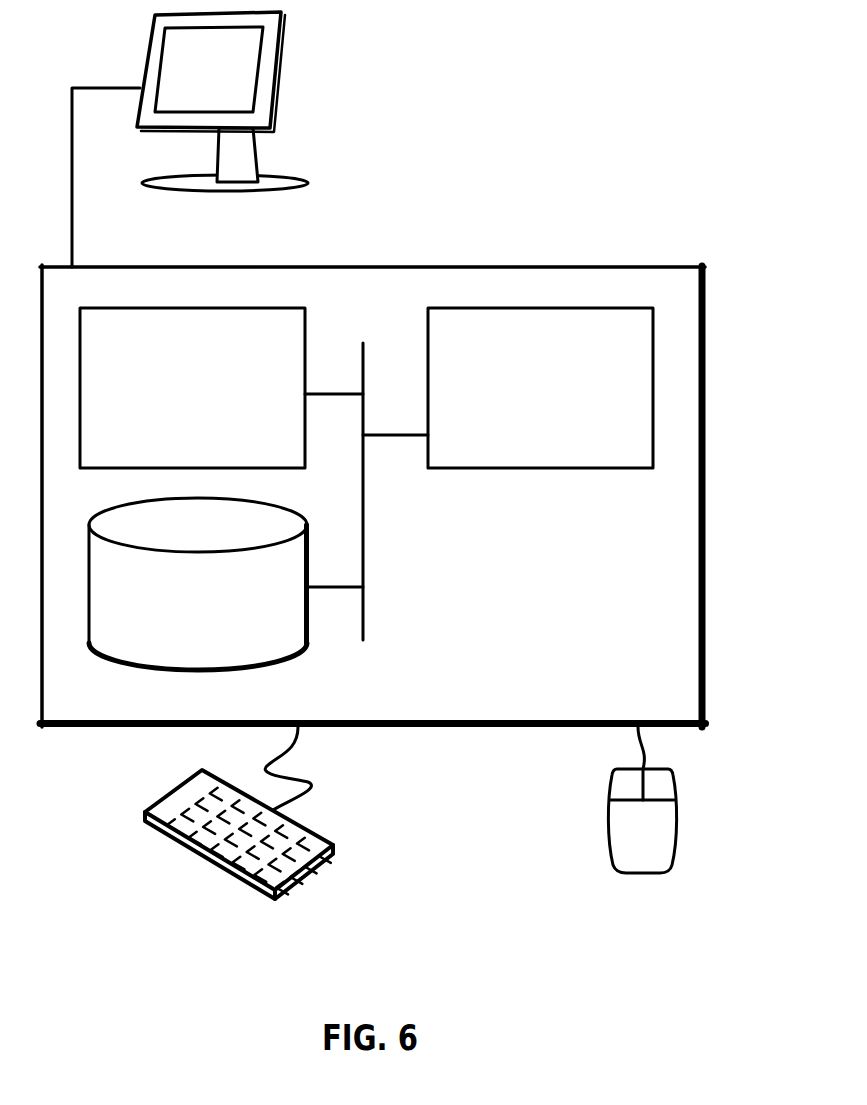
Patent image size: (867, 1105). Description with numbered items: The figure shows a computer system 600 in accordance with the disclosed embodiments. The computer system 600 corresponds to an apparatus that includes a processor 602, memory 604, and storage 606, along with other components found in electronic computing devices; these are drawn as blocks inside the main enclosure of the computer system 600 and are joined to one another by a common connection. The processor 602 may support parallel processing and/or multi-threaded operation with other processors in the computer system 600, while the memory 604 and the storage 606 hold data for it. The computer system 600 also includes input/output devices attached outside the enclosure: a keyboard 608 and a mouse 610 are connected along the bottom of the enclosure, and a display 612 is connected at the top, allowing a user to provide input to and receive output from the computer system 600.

The computer system 600 is at (418, 245).
The processor 602 is at (524, 400).
The memory 604 is at (175, 400).
The storage 606 is at (180, 612).
The keyboard 608 is at (163, 830).
The mouse 610 is at (622, 842).
The display 612 is at (190, 139).